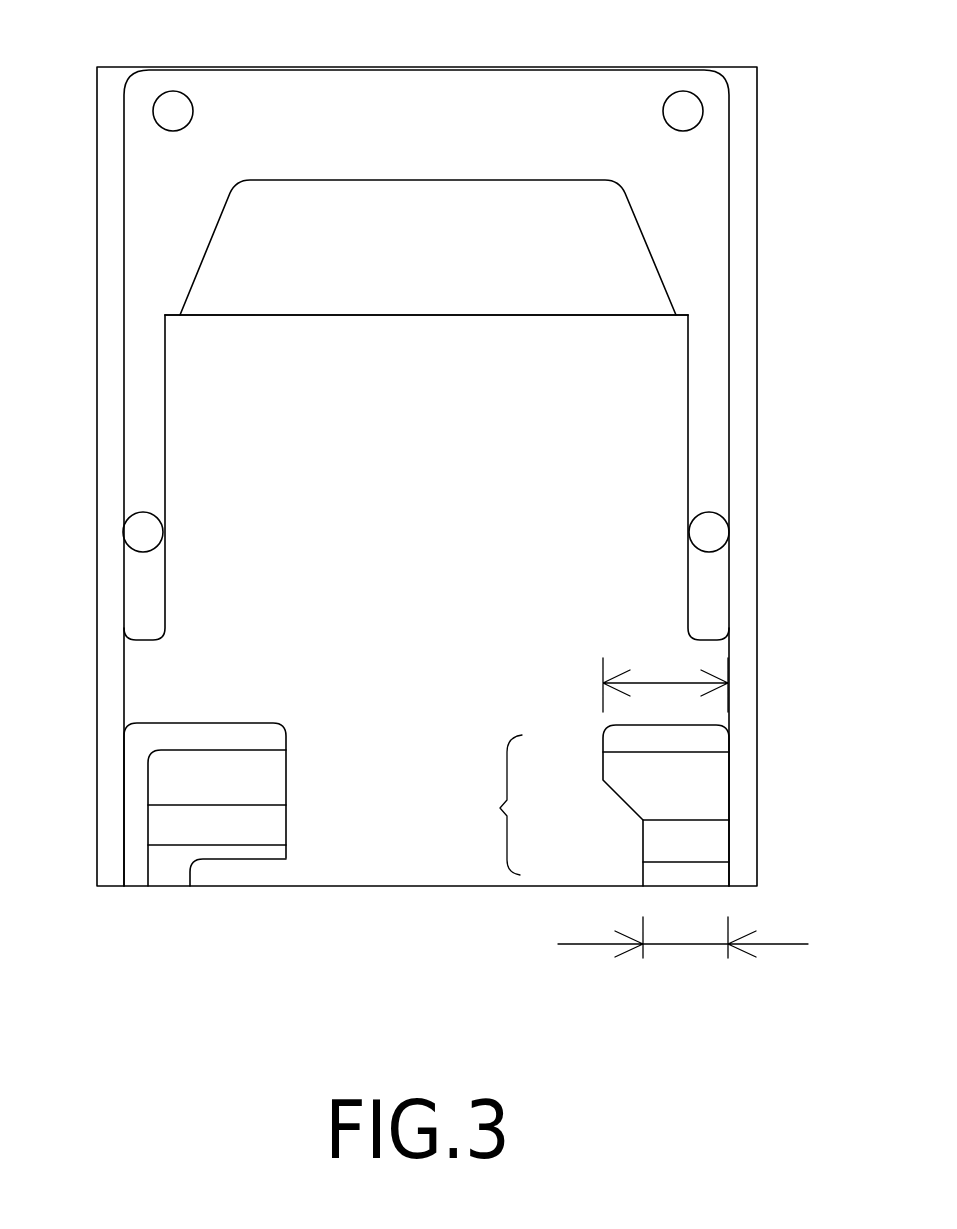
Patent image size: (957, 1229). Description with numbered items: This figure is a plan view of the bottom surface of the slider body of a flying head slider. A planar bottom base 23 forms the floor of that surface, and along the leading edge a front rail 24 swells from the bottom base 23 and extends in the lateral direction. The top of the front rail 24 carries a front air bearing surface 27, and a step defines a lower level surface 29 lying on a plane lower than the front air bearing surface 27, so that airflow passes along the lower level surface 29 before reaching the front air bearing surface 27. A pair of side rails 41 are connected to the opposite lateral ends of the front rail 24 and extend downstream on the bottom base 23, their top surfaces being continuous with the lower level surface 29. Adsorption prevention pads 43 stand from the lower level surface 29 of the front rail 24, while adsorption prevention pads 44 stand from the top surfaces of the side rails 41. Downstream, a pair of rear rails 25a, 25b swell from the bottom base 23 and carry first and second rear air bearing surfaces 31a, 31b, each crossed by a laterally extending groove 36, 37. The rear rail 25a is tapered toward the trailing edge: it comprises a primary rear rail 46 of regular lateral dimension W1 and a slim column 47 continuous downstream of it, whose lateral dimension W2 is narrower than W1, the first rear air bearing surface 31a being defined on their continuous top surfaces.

The lower level surface 29 is at (460, 85).
The adsorption prevention pad 43 is at (195, 113).
The bottom base 23 is at (438, 573).
The front rail 24 is at (508, 317).
The front air bearing surface 27 is at (402, 300).
The side rail 41 is at (165, 434).
The adsorption prevention pad 44 is at (163, 534).
The second rear air bearing surface 31b is at (282, 772).
The groove 37 is at (262, 806).
The rear rail 25b is at (252, 858).
The first rear air bearing surface 31a is at (715, 783).
The primary rear rail 46 is at (602, 763).
The slim column 47 is at (643, 858).
The groove 36 is at (700, 820).
The rear rail 25a is at (466, 805).
The regular lateral dimension W1 is at (660, 683).
The lateral dimension W2 is at (683, 965).